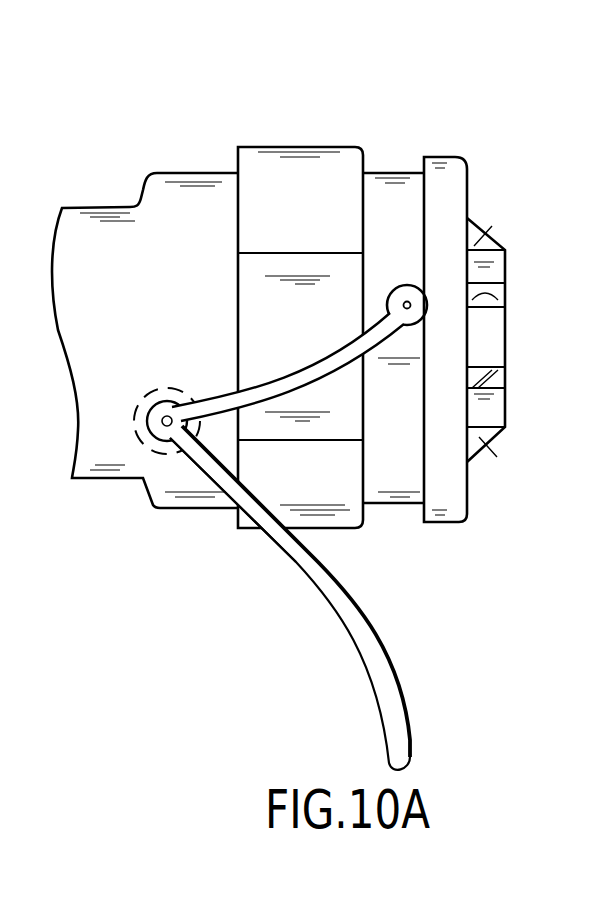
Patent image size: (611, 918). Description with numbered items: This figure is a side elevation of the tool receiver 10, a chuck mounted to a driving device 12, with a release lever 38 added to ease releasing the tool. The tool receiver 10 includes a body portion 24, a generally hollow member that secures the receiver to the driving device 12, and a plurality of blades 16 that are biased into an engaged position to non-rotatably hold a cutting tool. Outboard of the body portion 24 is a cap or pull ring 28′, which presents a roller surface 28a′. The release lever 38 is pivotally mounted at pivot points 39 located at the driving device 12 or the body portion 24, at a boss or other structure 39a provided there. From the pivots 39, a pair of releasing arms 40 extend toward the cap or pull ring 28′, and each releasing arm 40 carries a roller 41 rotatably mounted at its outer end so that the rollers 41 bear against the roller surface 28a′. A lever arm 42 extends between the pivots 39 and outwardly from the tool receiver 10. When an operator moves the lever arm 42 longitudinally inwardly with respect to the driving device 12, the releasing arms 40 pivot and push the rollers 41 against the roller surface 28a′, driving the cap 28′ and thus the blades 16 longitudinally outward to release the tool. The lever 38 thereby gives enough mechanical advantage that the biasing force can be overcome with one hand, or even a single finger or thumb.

The tool receiver 10 is at (212, 82).
The driving device 12 is at (106, 237).
The blades 16 is at (493, 224).
The body portion 24 is at (301, 127).
The cap or pull ring 28′ is at (477, 147).
The roller surface 28a′ is at (424, 222).
The release lever 38 is at (195, 487).
The pivot points 39 is at (163, 427).
The boss 39a is at (156, 385).
The releasing arms 40 is at (310, 373).
The roller 41 is at (407, 285).
The lever arm 42 is at (387, 645).